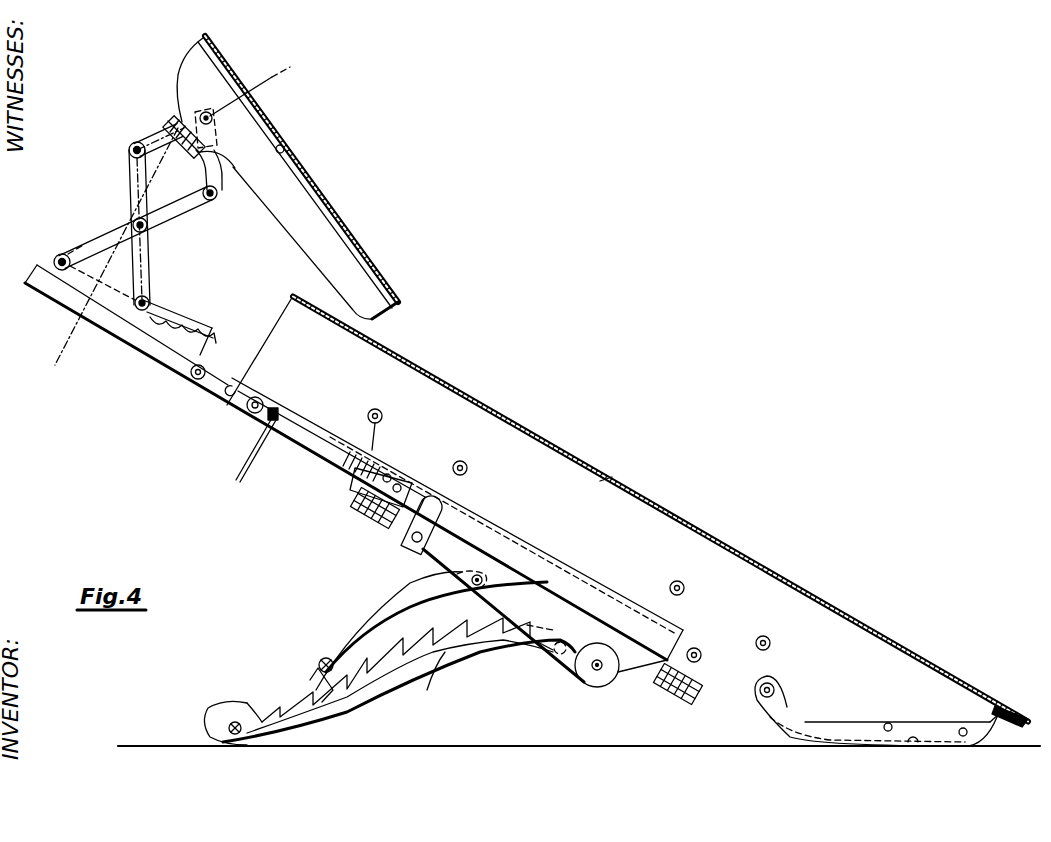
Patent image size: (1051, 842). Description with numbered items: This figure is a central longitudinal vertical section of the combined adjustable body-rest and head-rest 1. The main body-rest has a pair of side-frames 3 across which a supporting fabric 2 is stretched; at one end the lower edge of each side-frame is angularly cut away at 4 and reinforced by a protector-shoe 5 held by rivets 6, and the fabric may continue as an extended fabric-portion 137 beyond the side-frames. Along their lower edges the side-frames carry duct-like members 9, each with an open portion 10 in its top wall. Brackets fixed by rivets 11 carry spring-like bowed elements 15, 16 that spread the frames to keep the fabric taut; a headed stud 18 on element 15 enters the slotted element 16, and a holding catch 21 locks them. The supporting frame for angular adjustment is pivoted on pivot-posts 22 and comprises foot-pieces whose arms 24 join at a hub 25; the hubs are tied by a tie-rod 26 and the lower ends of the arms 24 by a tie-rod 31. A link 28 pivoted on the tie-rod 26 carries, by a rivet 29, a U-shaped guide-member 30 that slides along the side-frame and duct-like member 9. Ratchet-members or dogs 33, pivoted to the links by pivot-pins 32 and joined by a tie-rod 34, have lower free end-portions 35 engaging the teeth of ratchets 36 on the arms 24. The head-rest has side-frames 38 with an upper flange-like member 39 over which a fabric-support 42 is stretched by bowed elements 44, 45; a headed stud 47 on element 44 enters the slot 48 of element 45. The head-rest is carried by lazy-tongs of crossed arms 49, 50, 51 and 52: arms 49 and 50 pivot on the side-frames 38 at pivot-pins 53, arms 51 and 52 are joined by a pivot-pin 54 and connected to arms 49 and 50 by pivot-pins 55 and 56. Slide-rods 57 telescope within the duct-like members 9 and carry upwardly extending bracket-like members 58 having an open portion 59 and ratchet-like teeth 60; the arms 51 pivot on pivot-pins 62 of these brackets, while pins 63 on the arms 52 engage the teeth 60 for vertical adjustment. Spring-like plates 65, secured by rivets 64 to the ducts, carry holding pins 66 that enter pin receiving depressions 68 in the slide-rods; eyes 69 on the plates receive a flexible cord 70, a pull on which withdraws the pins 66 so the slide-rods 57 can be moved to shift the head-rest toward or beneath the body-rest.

The combined adjustable body-rest and head-rest 1 is at (627, 509).
The supporting fabric 2 is at (565, 453).
The side-frame 3 is at (607, 490).
The angularly cut-away portion 4 is at (913, 746).
The protector-shoe 5 is at (852, 735).
The rivet 6 is at (775, 690).
The duct-like member 9 is at (242, 410).
The open portion 10 is at (385, 438).
The rivet 11 is at (377, 409).
The bowed element 15 is at (352, 502).
The bowed element 16 is at (372, 522).
The headed stud 18 is at (440, 498).
The holding catch 21 is at (358, 494).
The pivot-post 22 is at (697, 648).
The arm 24 is at (213, 708).
The hub or eye-portion 25 is at (640, 672).
The tie-rod 26 is at (593, 671).
The link 28 is at (560, 655).
The rivet or pin 29 is at (412, 545).
The guide-member 30 is at (440, 515).
The tie-rod 31 is at (242, 720).
The pivot-pin 32 is at (472, 585).
The ratchet-member or dog 33 is at (372, 616).
The tie-rod 34 is at (320, 660).
The lower free end-portion 35 is at (348, 705).
The ratchet 36 is at (420, 665).
The side-frame 38 is at (297, 235).
The flange-like member 39 is at (284, 149).
The fabric-support 42 is at (320, 186).
The bowed element 44 is at (168, 122).
The bowed element 45 is at (176, 118).
The headed stud 47 is at (206, 112).
The slot 48 is at (217, 145).
The crossed arm 49 is at (130, 143).
The crossed arm 50 is at (204, 172).
The crossed arm 51 is at (187, 209).
The crossed arm 52 is at (129, 196).
The pivot-pin 53 is at (214, 118).
The pivot-pin 54 is at (148, 232).
The pivot-pin 55 is at (128, 152).
The pivot-pin 56 is at (216, 198).
The slide-rod 57 is at (60, 295).
The bracket-like member 58 is at (67, 245).
The open portion 59 is at (210, 330).
The ratchet-like teeth 60 is at (182, 320).
The pivot-pin 62 is at (55, 259).
The pin or projection 63 is at (148, 300).
The rivet 64 is at (398, 476).
The spring-like plate 65 is at (305, 446).
The holding pin 66 is at (262, 398).
The pin receiving depression 68 is at (198, 380).
The eye 69 is at (278, 410).
The flexible cord 70 is at (238, 470).
The extended fabric-portion 137 is at (1018, 715).